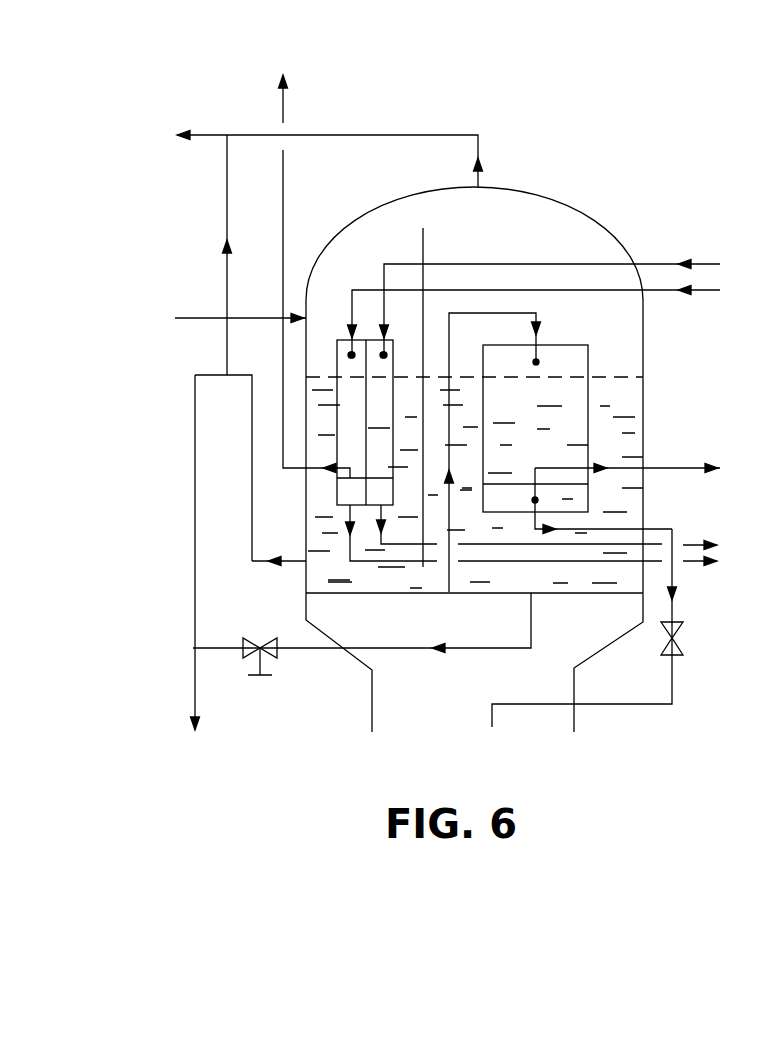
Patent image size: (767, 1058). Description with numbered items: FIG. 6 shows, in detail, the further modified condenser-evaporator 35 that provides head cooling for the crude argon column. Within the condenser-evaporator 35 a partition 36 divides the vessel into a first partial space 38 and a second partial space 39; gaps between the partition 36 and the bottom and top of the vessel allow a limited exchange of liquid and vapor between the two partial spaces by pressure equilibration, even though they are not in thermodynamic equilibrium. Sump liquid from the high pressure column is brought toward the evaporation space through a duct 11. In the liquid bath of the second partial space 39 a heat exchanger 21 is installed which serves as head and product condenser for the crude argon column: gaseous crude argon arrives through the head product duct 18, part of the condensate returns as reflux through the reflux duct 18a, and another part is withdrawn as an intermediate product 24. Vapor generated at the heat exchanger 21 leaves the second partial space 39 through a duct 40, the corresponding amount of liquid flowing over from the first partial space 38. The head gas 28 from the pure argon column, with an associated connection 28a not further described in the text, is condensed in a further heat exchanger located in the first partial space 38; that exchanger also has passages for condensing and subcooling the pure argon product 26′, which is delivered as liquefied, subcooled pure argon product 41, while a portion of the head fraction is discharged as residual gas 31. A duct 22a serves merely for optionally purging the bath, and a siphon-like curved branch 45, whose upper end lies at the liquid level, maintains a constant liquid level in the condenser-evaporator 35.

The duct 11 is at (178, 318).
The head product duct 18 is at (545, 313).
The reflux duct 18a is at (662, 527).
The heat exchanger 21 is at (535, 428).
The duct 22a is at (480, 650).
The intermediate product 24 is at (675, 467).
The pure argon product 26′ is at (653, 262).
The head gas 28 is at (654, 293).
The outlet line 28a is at (695, 568).
The residual gas 31 is at (283, 115).
The condenser-evaporator 35 is at (489, 434).
The partition 36 is at (421, 240).
The first partial space 38 is at (431, 305).
The second partial space 39 is at (474, 243).
The duct 40 is at (420, 133).
The pure argon product 41 is at (695, 538).
The branch 45 is at (185, 462).